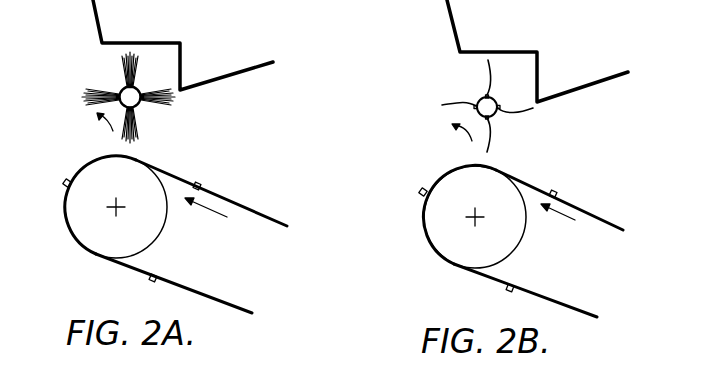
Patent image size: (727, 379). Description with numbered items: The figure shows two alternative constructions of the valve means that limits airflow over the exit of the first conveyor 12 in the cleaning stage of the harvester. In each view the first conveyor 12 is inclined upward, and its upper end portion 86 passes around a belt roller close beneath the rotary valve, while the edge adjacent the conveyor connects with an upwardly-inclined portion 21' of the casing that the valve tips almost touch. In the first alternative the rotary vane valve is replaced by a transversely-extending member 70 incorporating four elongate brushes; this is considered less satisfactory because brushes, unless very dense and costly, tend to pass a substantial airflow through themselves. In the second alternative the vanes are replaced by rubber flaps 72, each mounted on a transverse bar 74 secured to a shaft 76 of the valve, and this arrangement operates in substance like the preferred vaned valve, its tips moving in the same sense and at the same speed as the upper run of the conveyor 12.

In FIG. 2A, the upwardly-inclined portion of the casing 21' is at (158, 45).
In FIG. 2B, the upwardly-inclined portion of the casing 21' is at (512, 51).
In FIG. 2A, the transversely-extending member incorporating four elongate brushes 70 is at (172, 101).
In FIG. 2A, the upper end portion of the first conveyor belt 86 is at (122, 157).
In FIG. 2B, the upper end portion of the first conveyor belt 86 is at (480, 167).
In FIG. 2A, the first conveyor 12 is at (233, 203).
In FIG. 2B, the first conveyor 12 is at (584, 209).
In FIG. 2B, the shaft of the valve 76 is at (481, 96).
In FIG. 2B, the rubber flaps 72 is at (444, 104).
In FIG. 2B, the transverse bar 74 is at (499, 113).